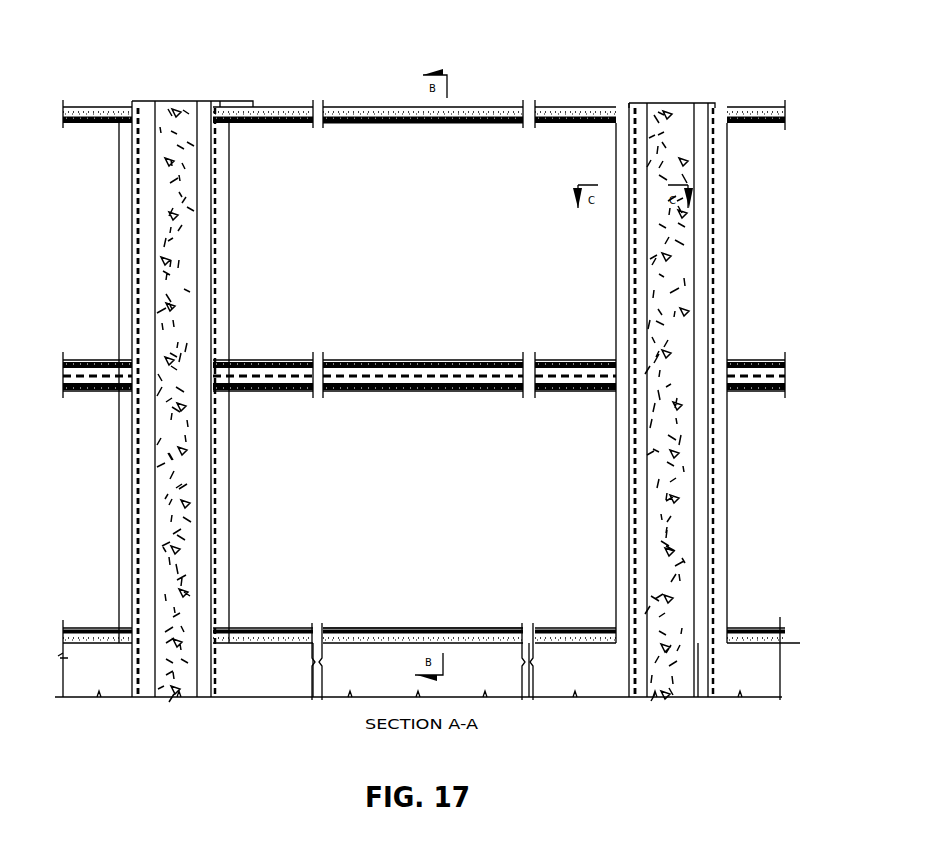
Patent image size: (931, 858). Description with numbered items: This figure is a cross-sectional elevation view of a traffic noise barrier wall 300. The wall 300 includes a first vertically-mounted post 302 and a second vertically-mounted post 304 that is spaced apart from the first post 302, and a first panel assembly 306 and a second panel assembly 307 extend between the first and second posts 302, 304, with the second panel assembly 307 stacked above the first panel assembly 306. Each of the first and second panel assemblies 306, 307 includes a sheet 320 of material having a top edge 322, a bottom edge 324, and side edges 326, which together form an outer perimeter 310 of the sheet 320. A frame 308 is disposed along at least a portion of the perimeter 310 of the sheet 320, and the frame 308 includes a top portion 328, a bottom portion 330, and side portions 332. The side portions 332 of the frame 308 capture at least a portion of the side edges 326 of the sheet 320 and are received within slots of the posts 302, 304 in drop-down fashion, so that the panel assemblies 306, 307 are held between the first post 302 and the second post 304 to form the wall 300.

The traffic noise barrier wall 300 is at (578, 72).
The first vertically-mounted post 302 is at (175, 100).
The second vertically-mounted post 304 is at (670, 100).
The first panel assembly 306 is at (440, 514).
The second panel assembly 307 is at (436, 274).
The frame 308 is at (280, 96).
The outer perimeter 310 is at (352, 107).
The sheet 320 is at (470, 160).
The top edge 322 is at (390, 108).
The bottom edge 324 is at (448, 378).
The side edge 326 is at (216, 232).
The top portion 328 is at (428, 110).
The bottom portion 330 is at (372, 372).
The side portions 332 is at (228, 170).